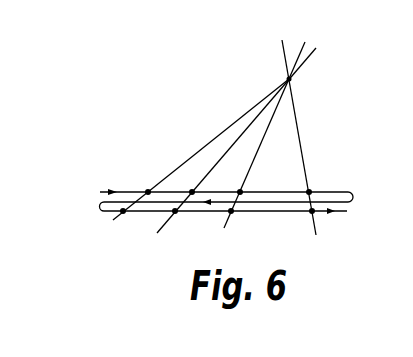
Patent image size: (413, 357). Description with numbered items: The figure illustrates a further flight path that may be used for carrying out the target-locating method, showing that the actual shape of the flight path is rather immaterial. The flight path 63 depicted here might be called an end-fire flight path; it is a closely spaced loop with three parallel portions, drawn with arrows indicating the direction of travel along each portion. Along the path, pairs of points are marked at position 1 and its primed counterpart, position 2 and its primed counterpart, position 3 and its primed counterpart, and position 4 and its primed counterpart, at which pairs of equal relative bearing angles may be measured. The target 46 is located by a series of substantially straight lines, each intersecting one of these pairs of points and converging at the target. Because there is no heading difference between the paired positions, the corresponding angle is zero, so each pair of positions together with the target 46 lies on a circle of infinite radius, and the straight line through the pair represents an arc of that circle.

The target 46 is at (288, 78).
The flight path 63 is at (259, 191).
The flight path position 1 is at (137, 203).
The flight path position 2 is at (183, 203).
The flight path position 3 is at (235, 203).
The flight path position 4 is at (309, 202).